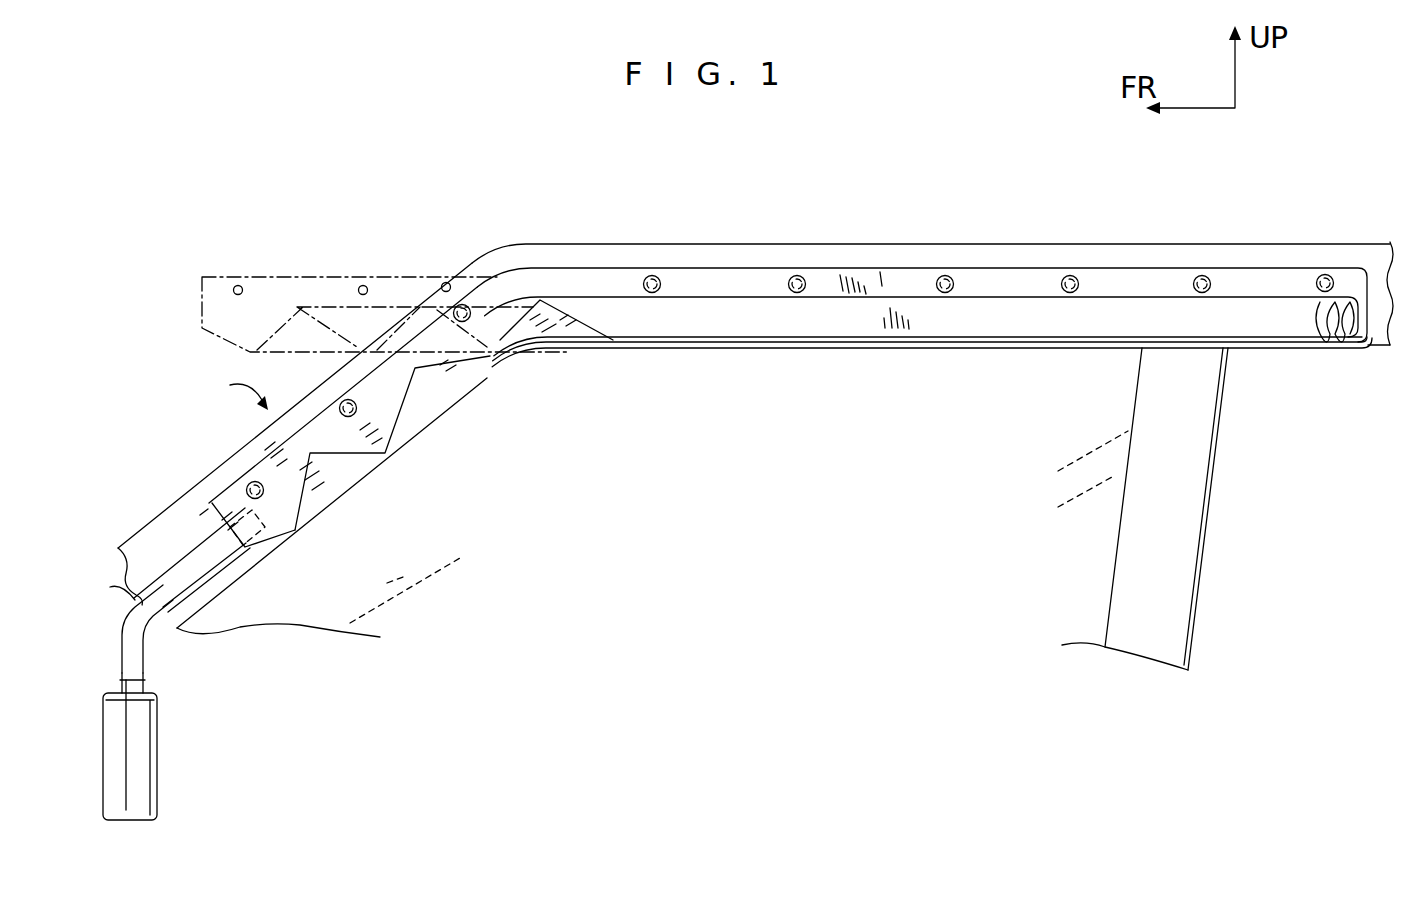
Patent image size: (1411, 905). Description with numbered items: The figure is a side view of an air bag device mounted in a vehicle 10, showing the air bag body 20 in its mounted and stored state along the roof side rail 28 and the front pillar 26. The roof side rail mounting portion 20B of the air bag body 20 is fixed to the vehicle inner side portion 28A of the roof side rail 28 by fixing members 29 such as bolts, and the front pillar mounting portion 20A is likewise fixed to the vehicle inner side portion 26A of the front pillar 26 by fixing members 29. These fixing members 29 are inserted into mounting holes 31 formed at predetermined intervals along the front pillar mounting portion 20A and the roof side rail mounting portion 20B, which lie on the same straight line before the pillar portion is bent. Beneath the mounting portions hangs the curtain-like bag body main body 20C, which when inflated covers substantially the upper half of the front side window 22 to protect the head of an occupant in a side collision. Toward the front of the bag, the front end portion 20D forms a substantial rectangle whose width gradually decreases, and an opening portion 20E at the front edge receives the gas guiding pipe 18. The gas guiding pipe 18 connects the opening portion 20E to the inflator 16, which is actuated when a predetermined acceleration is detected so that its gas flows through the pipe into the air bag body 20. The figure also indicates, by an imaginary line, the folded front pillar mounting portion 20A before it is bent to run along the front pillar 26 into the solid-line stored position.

The vehicle 10 is at (1192, 240).
The inflator 16 is at (157, 740).
The gas guiding pipe 18 is at (130, 602).
The air bag body 20 is at (418, 273).
The front pillar mounting portion 20A is at (307, 398).
The roof side rail mounting portion 20B is at (880, 285).
The bag body main body 20C is at (850, 325).
The front end portion 20D is at (344, 454).
The opening portion 20E is at (215, 322).
The front side window 22 is at (1098, 521).
The front pillar 26 is at (210, 468).
The vehicle inner side portion of the front pillar 26A is at (236, 605).
The roof side rail 28 is at (750, 246).
The vehicle inner side portion of the roof side rail 28A is at (652, 262).
The fixing members 29 is at (790, 288).
The mounting holes 31 is at (237, 285).